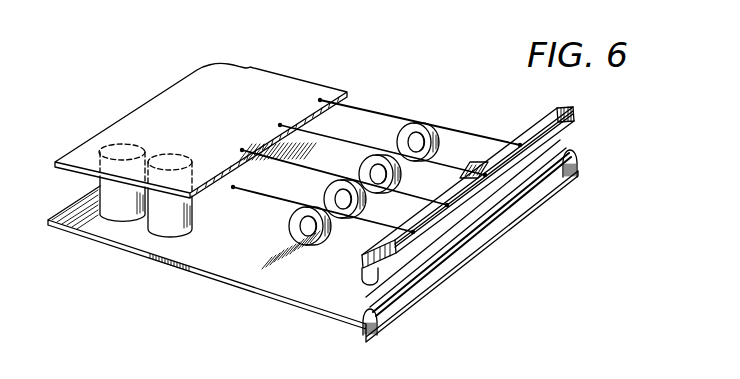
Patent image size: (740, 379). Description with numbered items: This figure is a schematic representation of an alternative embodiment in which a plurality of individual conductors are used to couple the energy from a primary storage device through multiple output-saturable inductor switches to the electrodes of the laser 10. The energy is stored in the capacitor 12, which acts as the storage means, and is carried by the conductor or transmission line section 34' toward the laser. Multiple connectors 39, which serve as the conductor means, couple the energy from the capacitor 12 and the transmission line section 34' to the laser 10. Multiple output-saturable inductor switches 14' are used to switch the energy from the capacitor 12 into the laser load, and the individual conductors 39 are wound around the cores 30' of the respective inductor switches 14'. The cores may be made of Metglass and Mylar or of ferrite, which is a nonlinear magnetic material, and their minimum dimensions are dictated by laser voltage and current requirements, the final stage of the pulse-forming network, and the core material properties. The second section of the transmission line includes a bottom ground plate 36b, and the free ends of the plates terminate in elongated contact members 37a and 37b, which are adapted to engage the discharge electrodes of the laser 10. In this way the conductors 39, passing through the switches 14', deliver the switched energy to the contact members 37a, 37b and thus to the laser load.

The laser 10 is at (313, 215).
The capacitor 12 is at (155, 223).
The output-saturable inductor switches 14' is at (384, 187).
The cores 30' is at (390, 190).
The transmission line section 34' is at (201, 130).
The bottom ground plate 36b is at (292, 300).
The elongated contact member 37a is at (485, 190).
The elongated contact member 37b is at (463, 262).
The connectors 39 is at (424, 121).